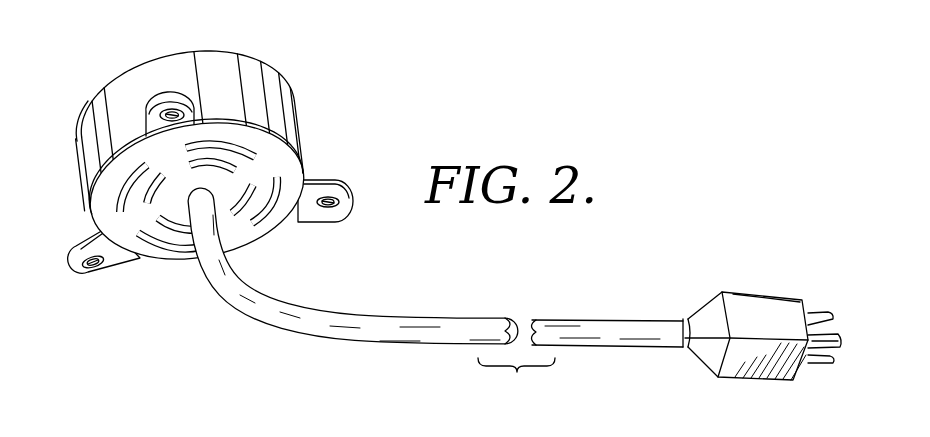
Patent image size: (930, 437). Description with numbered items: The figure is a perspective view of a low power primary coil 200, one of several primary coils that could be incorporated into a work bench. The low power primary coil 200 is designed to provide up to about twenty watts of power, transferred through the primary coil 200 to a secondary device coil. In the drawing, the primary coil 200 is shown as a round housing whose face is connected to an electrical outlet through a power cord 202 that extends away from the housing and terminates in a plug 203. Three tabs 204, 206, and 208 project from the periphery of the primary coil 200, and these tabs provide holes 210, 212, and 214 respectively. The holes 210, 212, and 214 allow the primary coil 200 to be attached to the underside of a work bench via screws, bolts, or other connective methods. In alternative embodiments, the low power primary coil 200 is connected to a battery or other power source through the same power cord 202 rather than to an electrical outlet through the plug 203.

The low power primary coil 200 is at (218, 162).
The power cord 202 is at (444, 318).
The plug 203 is at (763, 293).
The tab 204 is at (340, 201).
The tab 206 is at (133, 80).
The tab 208 is at (100, 263).
The hole 210 is at (355, 218).
The hole 212 is at (174, 110).
The hole 214 is at (106, 258).